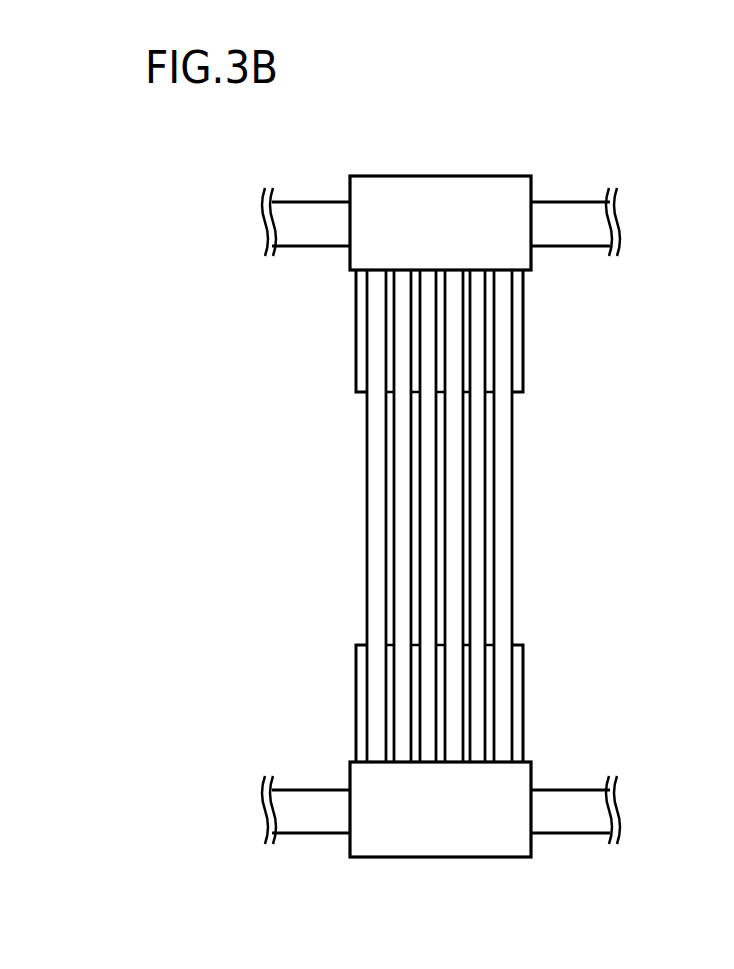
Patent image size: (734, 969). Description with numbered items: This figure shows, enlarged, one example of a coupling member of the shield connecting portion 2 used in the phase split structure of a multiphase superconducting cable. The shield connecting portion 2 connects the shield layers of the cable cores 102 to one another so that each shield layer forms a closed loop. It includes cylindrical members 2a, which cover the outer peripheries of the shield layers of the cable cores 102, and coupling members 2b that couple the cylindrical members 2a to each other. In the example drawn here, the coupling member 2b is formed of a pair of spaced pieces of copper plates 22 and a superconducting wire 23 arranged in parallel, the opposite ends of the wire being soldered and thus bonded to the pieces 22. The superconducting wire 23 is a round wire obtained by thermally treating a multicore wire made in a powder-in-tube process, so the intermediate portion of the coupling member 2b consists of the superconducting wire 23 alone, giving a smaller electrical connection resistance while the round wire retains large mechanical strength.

The shield connecting portion 2 is at (507, 516).
The cylindrical member 2a is at (532, 264).
The coupling member 2b is at (514, 516).
The pieces of copper plates 22 is at (524, 362).
The superconducting wire 23 is at (504, 497).
The cable core 102 is at (300, 203).